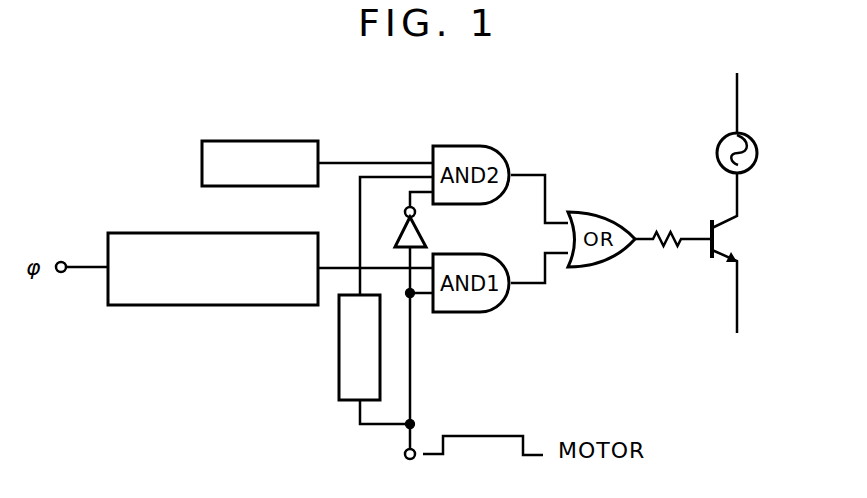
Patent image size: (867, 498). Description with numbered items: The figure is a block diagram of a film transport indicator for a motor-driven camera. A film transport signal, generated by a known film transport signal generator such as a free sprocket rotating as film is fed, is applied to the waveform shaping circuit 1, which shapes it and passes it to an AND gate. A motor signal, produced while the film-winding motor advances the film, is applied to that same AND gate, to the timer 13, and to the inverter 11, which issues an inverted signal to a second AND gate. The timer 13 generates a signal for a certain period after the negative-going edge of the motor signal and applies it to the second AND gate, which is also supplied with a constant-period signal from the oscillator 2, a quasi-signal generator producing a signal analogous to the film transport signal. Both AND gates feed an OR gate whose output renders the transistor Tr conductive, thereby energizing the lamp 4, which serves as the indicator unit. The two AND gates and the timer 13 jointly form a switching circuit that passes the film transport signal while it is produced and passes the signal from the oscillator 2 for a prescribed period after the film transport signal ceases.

The waveform shaping circuit 1 is at (272, 306).
The oscillator 2 is at (319, 150).
The lamp 4 is at (757, 164).
The inverter 11 is at (418, 232).
The timer 13 is at (337, 353).
The transistor Tr is at (733, 242).